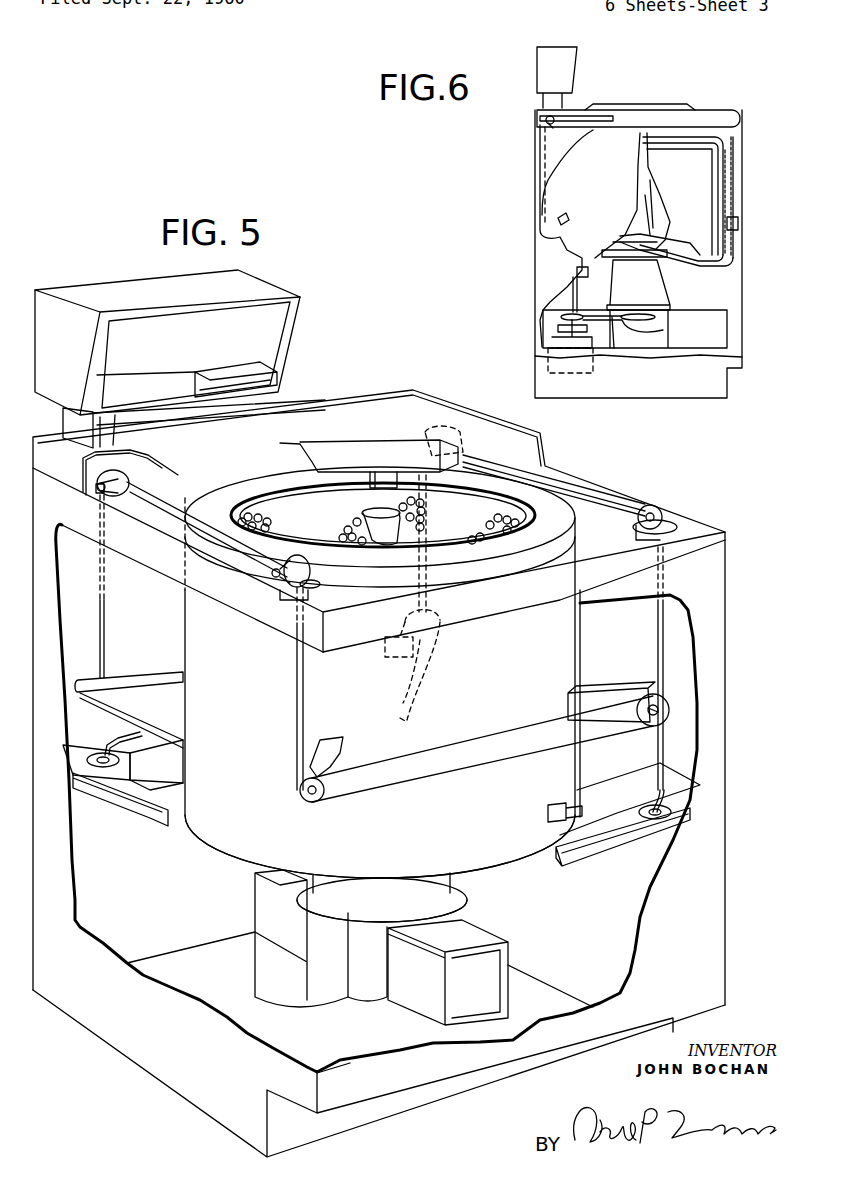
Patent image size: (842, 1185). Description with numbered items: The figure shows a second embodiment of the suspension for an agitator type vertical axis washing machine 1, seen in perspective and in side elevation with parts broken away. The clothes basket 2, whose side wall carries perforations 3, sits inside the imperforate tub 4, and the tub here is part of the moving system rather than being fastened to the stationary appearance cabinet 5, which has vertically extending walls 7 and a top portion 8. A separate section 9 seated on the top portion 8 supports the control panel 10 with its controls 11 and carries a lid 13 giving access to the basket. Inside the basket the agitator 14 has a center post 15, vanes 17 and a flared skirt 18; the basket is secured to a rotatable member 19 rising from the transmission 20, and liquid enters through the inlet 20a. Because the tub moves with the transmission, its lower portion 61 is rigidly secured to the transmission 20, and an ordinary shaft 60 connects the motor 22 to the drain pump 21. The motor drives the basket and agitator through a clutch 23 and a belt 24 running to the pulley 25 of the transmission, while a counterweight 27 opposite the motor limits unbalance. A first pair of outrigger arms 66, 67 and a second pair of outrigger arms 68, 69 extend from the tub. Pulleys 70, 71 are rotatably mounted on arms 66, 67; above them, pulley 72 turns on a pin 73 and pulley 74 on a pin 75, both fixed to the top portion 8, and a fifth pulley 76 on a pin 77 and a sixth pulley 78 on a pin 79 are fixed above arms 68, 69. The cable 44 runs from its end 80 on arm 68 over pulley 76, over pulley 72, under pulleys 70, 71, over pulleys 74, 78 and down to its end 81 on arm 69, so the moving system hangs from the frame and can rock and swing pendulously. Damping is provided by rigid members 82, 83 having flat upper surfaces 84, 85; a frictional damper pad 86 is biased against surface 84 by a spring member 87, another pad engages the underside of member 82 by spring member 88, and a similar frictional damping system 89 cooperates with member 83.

In FIG. 5, the washing machine 1 is at (339, 368).
In FIG. 5, the clothes basket 2 is at (460, 535).
In FIG. 6, the clothes basket 2 is at (708, 180).
In FIG. 5, the perforations 3 is at (575, 517).
In FIG. 6, the perforations 3 is at (735, 168).
In FIG. 5, the tub 4 is at (525, 848).
In FIG. 6, the tub 4 is at (727, 262).
In FIG. 5, the appearance cabinet 5 is at (722, 583).
In FIG. 6, the appearance cabinet 5 is at (538, 162).
In FIG. 5, the vertically extending walls 7 is at (207, 1097).
In FIG. 5, the top portion 8 is at (343, 592).
In FIG. 5, the separate section 9 is at (408, 392).
In FIG. 6, the separate section 9 is at (727, 112).
In FIG. 5, the control panel 10 is at (130, 287).
In FIG. 6, the control panel 10 is at (567, 63).
In FIG. 5, the controls 11 is at (257, 368).
In FIG. 6, the lid 13 is at (650, 105).
In FIG. 5, the agitator 14 is at (370, 539).
In FIG. 6, the agitator 14 is at (645, 170).
In FIG. 6, the center post 15 is at (637, 163).
In FIG. 6, the vanes 17 is at (662, 212).
In FIG. 6, the skirt 18 is at (687, 245).
In FIG. 6, the rotatable member 19 is at (640, 250).
In FIG. 5, the transmission 20 is at (365, 985).
In FIG. 5, the inlet 20a is at (383, 478).
In FIG. 6, the pump 21 is at (576, 275).
In FIG. 5, the motor 22 is at (302, 993).
In FIG. 6, the motor 22 is at (550, 353).
In FIG. 6, the clutch 23 is at (563, 317).
In FIG. 6, the belt 24 is at (612, 318).
In FIG. 6, the pulley 25 is at (590, 340).
In FIG. 5, the counterweight 27 is at (440, 1010).
In FIG. 5, the cable 44 is at (297, 692).
In FIG. 6, the cable 44 is at (540, 208).
In FIG. 6, the shaft 60 is at (580, 291).
In FIG. 6, the lower portion of the tub 61 is at (612, 262).
In FIG. 5, the outrigger arm 66 is at (345, 758).
In FIG. 5, the outrigger arm 67 is at (572, 708).
In FIG. 5, the outrigger arm 68 is at (160, 672).
In FIG. 6, the outrigger arm 68 is at (575, 222).
In FIG. 5, the outrigger arm 69 is at (420, 658).
In FIG. 5, the pulley 70 is at (310, 803).
In FIG. 5, the pulley 71 is at (651, 694).
In FIG. 6, the pulley 71 is at (738, 236).
In FIG. 5, the pulley 72 is at (290, 596).
In FIG. 5, the pin 73 is at (283, 580).
In FIG. 5, the pulley 74 is at (662, 510).
In FIG. 5, the pin 75 is at (645, 535).
In FIG. 5, the fifth pulley 76 is at (125, 479).
In FIG. 6, the fifth pulley 76 is at (545, 120).
In FIG. 5, the pin 77 is at (102, 492).
In FIG. 6, the pin 77 is at (553, 125).
In FIG. 5, the sixth pulley 78 is at (455, 428).
In FIG. 5, the pin 79 is at (408, 447).
In FIG. 5, the cable end 80 is at (108, 673).
In FIG. 5, the cable end 81 is at (433, 615).
In FIG. 5, the rigid member 82 is at (95, 793).
In FIG. 5, the rigid member 83 is at (612, 850).
In FIG. 5, the flat upper surface 84 is at (133, 767).
In FIG. 5, the flat upper surface 85 is at (672, 802).
In FIG. 5, the frictional damper pad 86 is at (93, 757).
In FIG. 5, the spring member 87 is at (127, 737).
In FIG. 5, the spring member 88 is at (185, 783).
In FIG. 5, the frictional damping system 89 is at (548, 812).